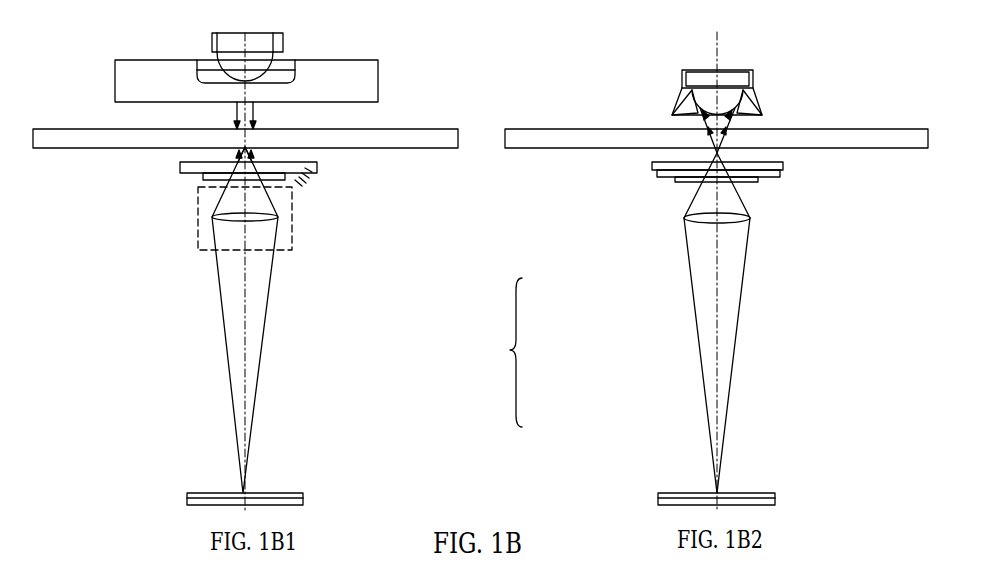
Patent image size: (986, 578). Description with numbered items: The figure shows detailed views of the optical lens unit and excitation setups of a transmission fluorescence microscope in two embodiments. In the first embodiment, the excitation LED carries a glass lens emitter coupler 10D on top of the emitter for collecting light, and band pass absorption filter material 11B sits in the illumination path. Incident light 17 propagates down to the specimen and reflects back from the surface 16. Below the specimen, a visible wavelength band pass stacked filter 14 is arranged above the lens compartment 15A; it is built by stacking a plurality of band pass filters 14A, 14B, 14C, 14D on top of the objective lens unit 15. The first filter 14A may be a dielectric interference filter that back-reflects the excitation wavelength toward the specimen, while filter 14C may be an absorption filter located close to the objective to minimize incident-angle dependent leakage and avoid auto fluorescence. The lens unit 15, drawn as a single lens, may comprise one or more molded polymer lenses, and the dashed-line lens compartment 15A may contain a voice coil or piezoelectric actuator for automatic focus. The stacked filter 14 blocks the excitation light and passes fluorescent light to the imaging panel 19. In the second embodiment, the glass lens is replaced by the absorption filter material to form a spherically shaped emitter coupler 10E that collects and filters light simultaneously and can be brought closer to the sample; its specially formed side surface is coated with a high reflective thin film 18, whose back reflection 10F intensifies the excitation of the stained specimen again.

In FIG. 1B1, the glass lens emitter coupler 10D is at (200, 65).
In FIG. 1B1, the band pass absorption filter material 11B is at (353, 82).
In FIG. 1B2, the band pass absorption filter material 11B is at (692, 100).
In FIG. 1B1, the incident light 17 is at (258, 122).
In FIG. 1B2, the incident light 17 is at (708, 123).
In FIG. 1B1, the surface 16 is at (312, 164).
In FIG. 1B2, the surface 16 is at (660, 161).
In FIG. 1B1, the dielectric interference filter 14A is at (310, 170).
In FIG. 1B1, the band pass filter 14B is at (303, 175).
In FIG. 1B1, the absorption filter 14C is at (300, 178).
In FIG. 1B1, the band pass filter 14D is at (293, 180).
In FIG. 1B1, the stacked filter 14 is at (530, 352).
In FIG. 1B1, the lens compartment 15A is at (201, 203).
In FIG. 1B1, the lens unit 15 is at (225, 285).
In FIG. 1B1, the imaging panel 19 is at (270, 488).
In FIG. 1B2, the spherically shaped emitter coupler 10E is at (712, 110).
In FIG. 1B2, the back reflection 10F is at (752, 135).
In FIG. 1B2, the high reflective thin film 18 is at (752, 135).